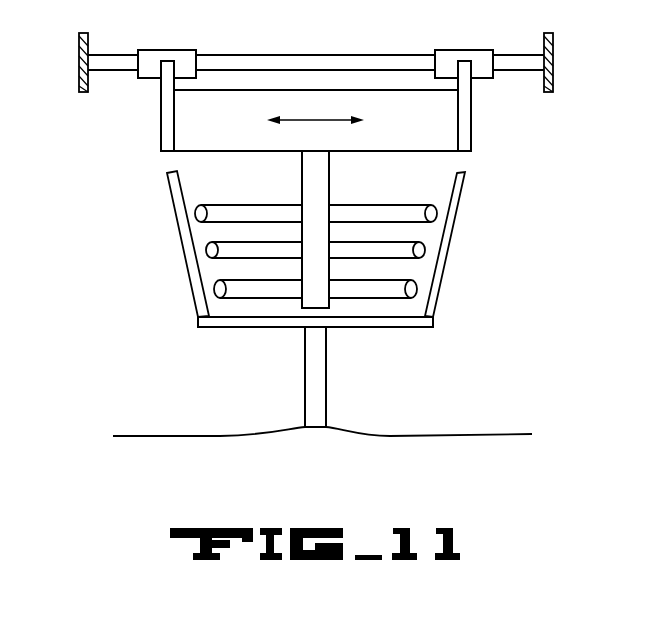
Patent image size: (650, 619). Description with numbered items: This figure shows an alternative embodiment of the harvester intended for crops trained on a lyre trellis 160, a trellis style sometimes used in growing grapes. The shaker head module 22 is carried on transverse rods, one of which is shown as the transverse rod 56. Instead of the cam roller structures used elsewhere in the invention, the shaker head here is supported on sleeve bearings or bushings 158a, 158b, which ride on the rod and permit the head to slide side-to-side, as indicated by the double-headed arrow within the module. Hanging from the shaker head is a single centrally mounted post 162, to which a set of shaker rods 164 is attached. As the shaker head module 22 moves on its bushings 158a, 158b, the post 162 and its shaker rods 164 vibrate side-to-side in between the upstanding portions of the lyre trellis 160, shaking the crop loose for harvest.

The shaker head module 22 is at (142, 158).
The transverse rod 56 is at (309, 53).
The sleeve bearing or bushing 158a is at (157, 49).
The sleeve bearing or bushing 158b is at (457, 50).
The lyre trellis 160 is at (324, 387).
The centrally mounted post 162 is at (330, 184).
The shaker rod 164 is at (422, 200).